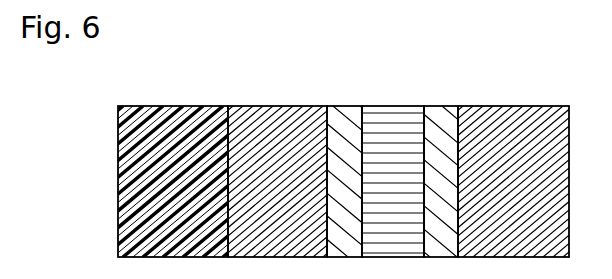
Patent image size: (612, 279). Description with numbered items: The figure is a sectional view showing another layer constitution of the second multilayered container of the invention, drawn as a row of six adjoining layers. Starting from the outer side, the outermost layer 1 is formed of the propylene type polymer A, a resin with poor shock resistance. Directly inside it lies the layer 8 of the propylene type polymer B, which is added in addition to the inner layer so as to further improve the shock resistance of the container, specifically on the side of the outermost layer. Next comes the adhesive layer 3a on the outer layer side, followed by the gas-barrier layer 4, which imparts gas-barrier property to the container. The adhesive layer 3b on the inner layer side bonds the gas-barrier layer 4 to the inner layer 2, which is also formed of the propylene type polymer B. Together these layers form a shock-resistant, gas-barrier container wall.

The outermost layer 1 is at (178, 117).
The layer of the propylene type polymer B 8 is at (285, 117).
The adhesive layer on the outer layer side 3a is at (346, 117).
The gas-barrier layer 4 is at (392, 117).
The adhesive layer on the inner layer side 3b is at (443, 117).
The inner layer 2 is at (516, 117).